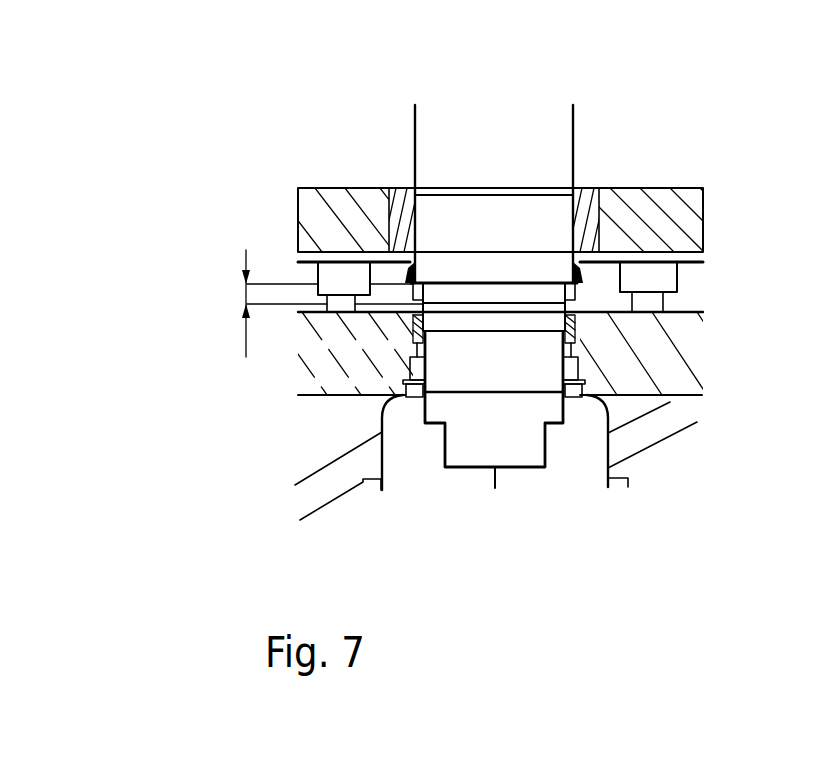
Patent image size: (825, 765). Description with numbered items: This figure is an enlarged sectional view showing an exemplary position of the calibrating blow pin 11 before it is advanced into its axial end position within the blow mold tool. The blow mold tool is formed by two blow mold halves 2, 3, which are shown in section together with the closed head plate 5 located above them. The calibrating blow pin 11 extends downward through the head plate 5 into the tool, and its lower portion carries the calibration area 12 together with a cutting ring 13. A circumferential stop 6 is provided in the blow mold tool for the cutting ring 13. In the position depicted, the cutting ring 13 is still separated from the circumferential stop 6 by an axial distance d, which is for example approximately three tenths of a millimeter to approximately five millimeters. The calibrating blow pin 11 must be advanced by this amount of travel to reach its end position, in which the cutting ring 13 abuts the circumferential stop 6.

The blow mold half 2 is at (300, 497).
The blow mold half 3 is at (647, 483).
The closed head plate 5 is at (625, 203).
The circumferential stop 6 is at (574, 298).
The calibrating blow pin 11 is at (550, 140).
The calibration area 12 is at (471, 352).
The cutting ring 13 is at (410, 273).
The axial distance d is at (242, 291).